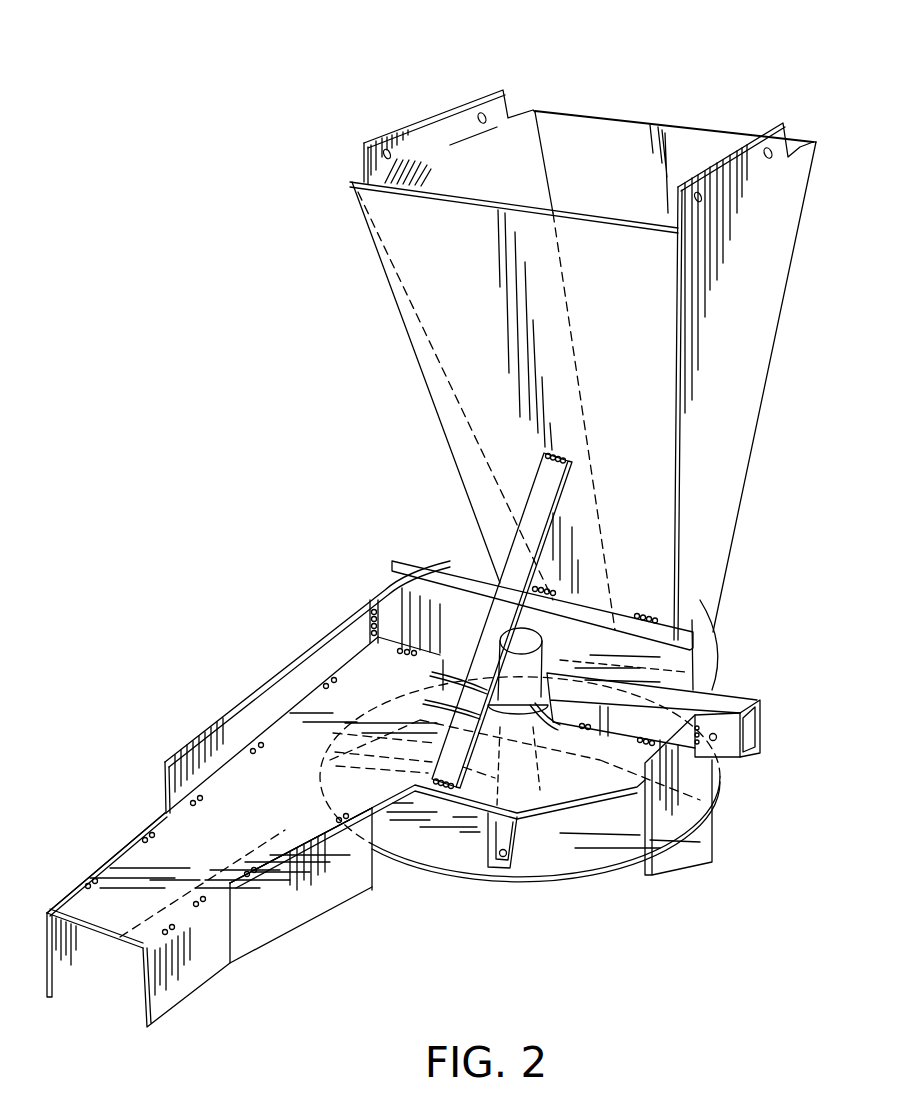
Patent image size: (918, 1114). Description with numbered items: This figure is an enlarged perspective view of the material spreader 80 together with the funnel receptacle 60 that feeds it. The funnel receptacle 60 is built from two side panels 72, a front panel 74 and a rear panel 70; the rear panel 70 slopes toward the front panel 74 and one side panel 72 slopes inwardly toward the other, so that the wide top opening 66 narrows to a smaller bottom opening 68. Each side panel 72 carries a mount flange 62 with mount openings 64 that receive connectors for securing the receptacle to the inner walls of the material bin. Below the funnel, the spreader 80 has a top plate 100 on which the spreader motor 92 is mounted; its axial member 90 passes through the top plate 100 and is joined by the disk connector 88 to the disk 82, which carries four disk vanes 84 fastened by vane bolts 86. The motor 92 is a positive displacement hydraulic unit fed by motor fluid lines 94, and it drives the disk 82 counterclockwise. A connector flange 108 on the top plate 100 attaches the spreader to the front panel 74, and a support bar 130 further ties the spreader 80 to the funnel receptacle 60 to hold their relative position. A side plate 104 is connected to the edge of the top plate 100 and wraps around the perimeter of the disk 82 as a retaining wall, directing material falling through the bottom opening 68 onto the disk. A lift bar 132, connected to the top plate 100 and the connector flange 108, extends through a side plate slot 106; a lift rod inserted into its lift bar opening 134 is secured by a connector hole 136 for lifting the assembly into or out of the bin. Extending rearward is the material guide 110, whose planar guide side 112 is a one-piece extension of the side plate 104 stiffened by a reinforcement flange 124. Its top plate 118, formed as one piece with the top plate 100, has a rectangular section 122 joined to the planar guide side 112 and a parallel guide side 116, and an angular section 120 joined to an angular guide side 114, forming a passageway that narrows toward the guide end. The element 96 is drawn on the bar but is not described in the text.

The funnel receptacle 60 is at (388, 291).
The mount flange 62 is at (436, 130).
The mount opening 64 is at (481, 112).
The top opening 66 is at (598, 115).
The bottom opening 68 is at (703, 633).
The rear panel 70 is at (630, 135).
The side panel 72 is at (508, 158).
The front panel 74 is at (462, 342).
The material spreader 80 is at (328, 583).
The disk 82 is at (450, 862).
The disk vane 84 is at (487, 860).
The vane bolt 86 is at (508, 860).
The disk connector 88 is at (580, 828).
The axial member 90 is at (527, 707).
The spreader motor 92 is at (523, 637).
The motor fluid line 94 is at (443, 693).
The support bar 96 is at (590, 714).
The top plate 100 is at (468, 792).
The side plate 104 is at (670, 845).
The side plate slot 106 is at (697, 720).
The connector flange 108 is at (617, 623).
The material guide 110 is at (138, 810).
The planar guide side 112 is at (57, 982).
The angular guide side 114 is at (277, 932).
The parallel guide side 116 is at (177, 993).
The top plate 118 is at (103, 870).
The angular section 120 is at (300, 830).
The rectangular section 122 is at (88, 908).
The reinforcement flange 124 is at (231, 722).
The support bar 130 is at (545, 475).
The lift bar 132 is at (723, 700).
The lift bar opening 134 is at (753, 738).
The connector hole 136 is at (717, 740).